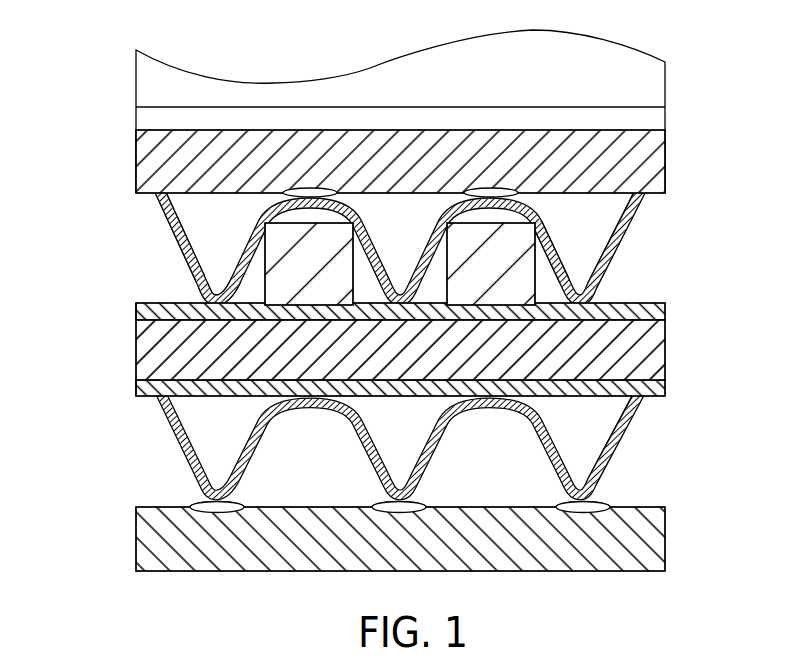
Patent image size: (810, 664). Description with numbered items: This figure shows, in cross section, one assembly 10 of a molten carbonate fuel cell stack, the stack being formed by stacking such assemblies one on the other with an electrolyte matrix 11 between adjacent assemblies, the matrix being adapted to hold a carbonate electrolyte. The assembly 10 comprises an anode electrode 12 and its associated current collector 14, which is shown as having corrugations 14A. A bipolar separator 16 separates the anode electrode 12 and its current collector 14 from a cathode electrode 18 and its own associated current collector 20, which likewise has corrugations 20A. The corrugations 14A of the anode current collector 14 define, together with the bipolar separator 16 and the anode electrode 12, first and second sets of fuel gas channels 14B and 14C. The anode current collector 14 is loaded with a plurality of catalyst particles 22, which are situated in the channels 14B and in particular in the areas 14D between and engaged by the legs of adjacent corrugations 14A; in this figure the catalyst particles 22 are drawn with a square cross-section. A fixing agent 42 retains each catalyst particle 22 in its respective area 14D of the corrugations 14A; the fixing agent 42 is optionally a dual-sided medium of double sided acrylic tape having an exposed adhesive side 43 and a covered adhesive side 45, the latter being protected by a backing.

The assembly 10 is at (96, 82).
The electrolyte matrix 11 is at (655, 120).
The anode electrode 12 is at (665, 143).
The current collector 14 is at (636, 226).
The corrugations 14A is at (620, 268).
The first set of fuel gas channels 14B is at (248, 288).
The second set of fuel gas channels 14C is at (205, 213).
The areas 14D is at (535, 217).
The bipolar separator 16 is at (655, 352).
The cathode electrode 18 is at (650, 540).
The current collector 20 is at (632, 438).
The corrugations 20A is at (613, 478).
The catalyst particles 22 is at (492, 265).
The fixing agent 42 is at (480, 193).
The exposed adhesive side 43 is at (137, 306).
The covered adhesive side 45 is at (137, 395).